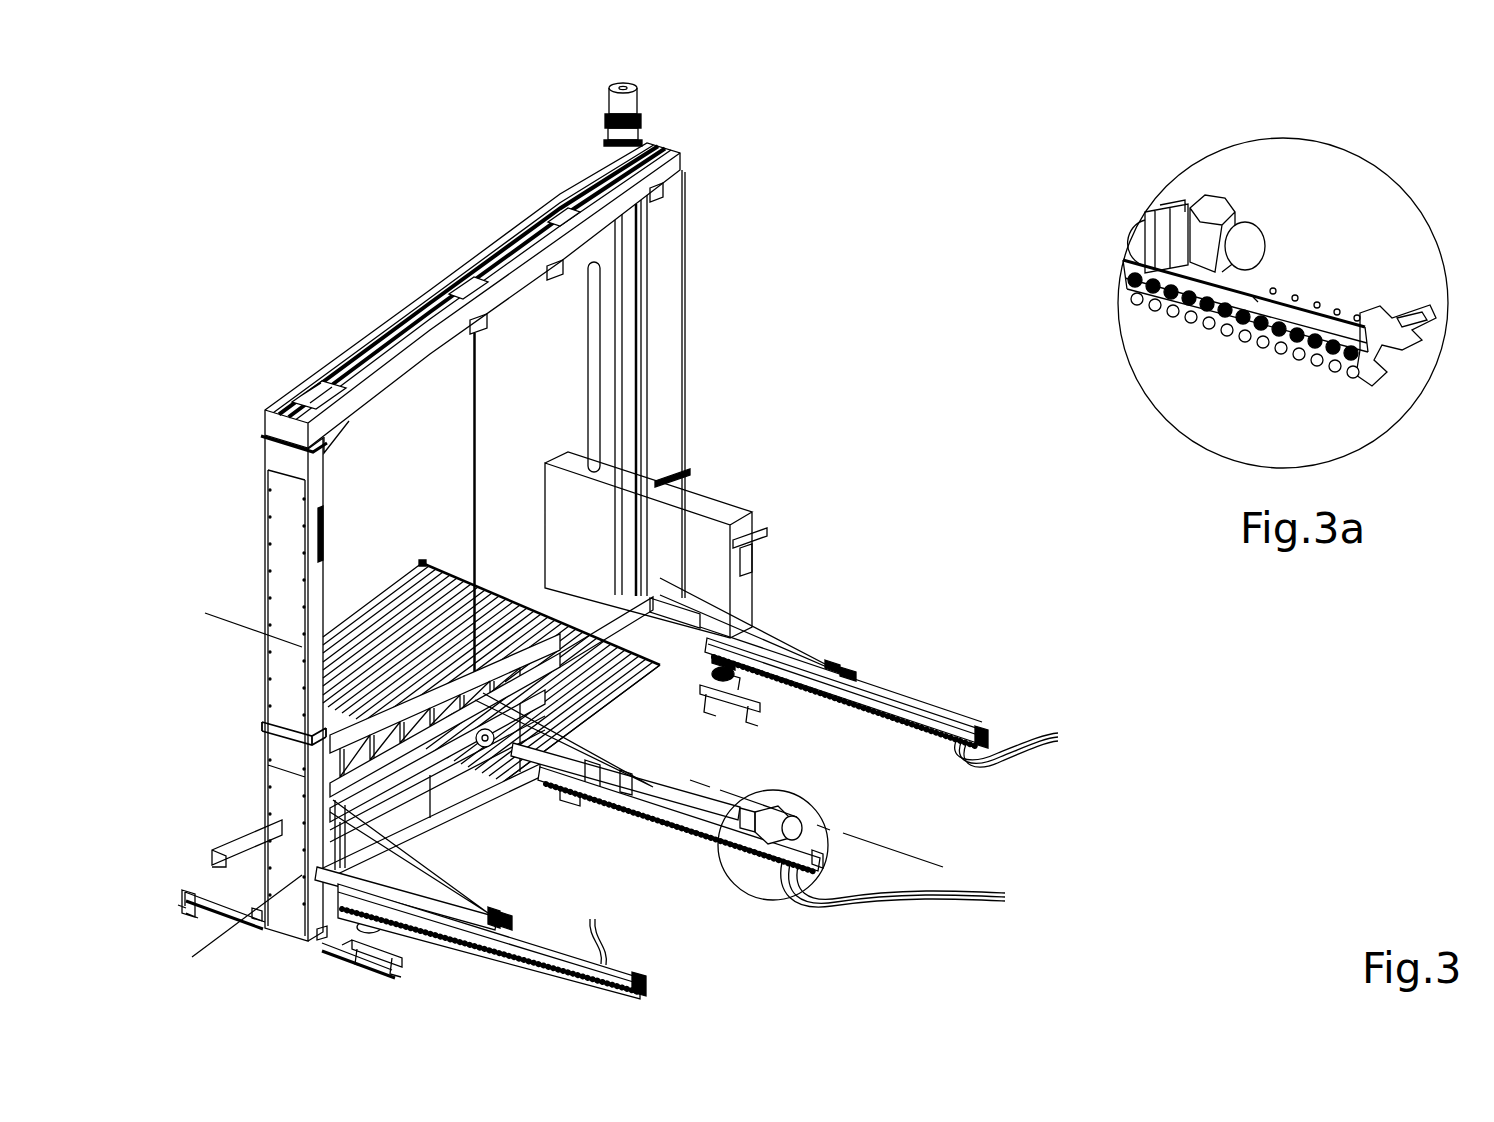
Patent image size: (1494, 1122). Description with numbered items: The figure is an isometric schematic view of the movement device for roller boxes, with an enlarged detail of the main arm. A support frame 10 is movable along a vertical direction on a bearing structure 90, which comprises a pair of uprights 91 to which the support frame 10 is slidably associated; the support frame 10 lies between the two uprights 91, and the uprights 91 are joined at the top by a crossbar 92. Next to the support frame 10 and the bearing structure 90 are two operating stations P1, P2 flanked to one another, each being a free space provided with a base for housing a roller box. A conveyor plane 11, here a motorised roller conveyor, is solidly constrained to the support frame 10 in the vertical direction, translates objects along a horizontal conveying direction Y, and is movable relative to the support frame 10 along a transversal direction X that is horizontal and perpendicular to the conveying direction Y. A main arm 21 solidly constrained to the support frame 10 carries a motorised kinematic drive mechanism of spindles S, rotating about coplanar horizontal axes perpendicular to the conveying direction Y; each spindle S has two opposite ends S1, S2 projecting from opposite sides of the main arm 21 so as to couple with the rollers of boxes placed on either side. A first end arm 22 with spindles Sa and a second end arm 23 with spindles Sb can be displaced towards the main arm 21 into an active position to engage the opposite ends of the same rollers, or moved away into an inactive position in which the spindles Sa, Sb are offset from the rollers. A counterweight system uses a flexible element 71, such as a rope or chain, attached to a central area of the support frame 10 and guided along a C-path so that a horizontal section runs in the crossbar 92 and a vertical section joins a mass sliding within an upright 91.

In FIG. 3, the bearing structure 90 is at (240, 399).
In FIG. 3, the uprights 91 is at (667, 360).
In FIG. 3, the crossbar 92 is at (548, 204).
In FIG. 3, the flexible element 71 is at (477, 412).
In FIG. 3, the conveyor plane 11 is at (415, 567).
In FIG. 3, the support frame 10 is at (380, 748).
In FIG. 3, the first end arm 22 is at (908, 696).
In FIG. 3, the main arm 21 is at (812, 860).
In FIG. 3A, the main arm 21 is at (1237, 220).
In FIG. 3, the second end arm 23 is at (582, 973).
In FIG. 3, the first operating station P1 is at (813, 750).
In FIG. 3, the second operating station P2 is at (563, 864).
In FIG. 3, the spindles of the first external arm Sa is at (1027, 745).
In FIG. 3, the spindles of the second external arm Sb is at (596, 926).
In FIG. 3, the spindles S is at (859, 851).
In FIG. 3A, the spindles S is at (1283, 310).
In FIG. 3A, the first end of spindle S1 is at (1337, 312).
In FIG. 3A, the second end of spindle S2 is at (1335, 366).
In FIG. 3, the transversal direction X is at (238, 917).
In FIG. 3, the conveying direction Y is at (249, 616).